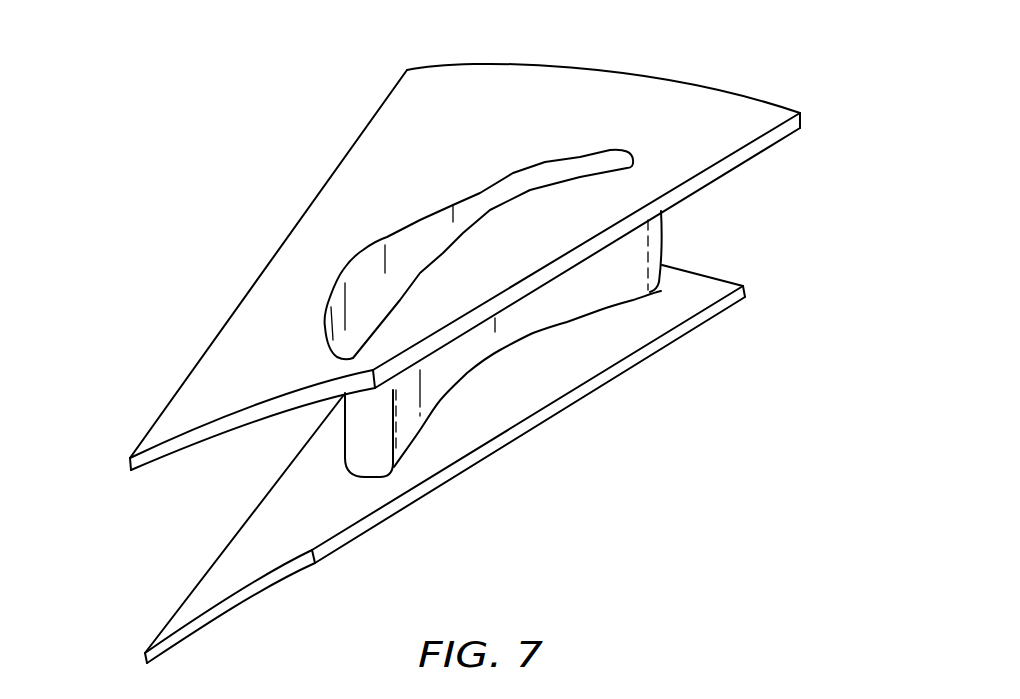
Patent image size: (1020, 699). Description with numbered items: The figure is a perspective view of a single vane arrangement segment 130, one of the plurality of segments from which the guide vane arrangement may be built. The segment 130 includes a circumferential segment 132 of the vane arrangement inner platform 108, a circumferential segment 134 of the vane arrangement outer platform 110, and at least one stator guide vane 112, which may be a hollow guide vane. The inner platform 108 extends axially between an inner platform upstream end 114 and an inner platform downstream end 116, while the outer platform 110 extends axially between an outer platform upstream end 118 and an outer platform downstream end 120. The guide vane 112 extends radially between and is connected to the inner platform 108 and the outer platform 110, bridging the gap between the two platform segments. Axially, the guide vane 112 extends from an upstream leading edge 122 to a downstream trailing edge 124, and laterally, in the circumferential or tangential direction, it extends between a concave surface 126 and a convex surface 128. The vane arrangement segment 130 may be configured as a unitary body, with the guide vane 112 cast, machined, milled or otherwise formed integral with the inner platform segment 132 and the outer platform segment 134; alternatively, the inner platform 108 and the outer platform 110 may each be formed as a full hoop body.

The vane arrangement inner platform 108 is at (675, 348).
The vane arrangement outer platform 110 is at (462, 257).
The stator guide vane 112 is at (582, 394).
The inner platform upstream end 114 is at (210, 608).
The inner platform downstream end 116 is at (489, 464).
The outer platform upstream end 118 is at (207, 430).
The outer platform downstream end 120 is at (702, 82).
The upstream leading edge 122 is at (367, 433).
The downstream trailing edge 124 is at (663, 237).
The concave surface 126 is at (533, 323).
The convex surface 128 is at (325, 302).
The vane arrangement segment 130 is at (462, 331).
The inner platform segment 132 is at (463, 467).
The outer platform segment 134 is at (197, 383).